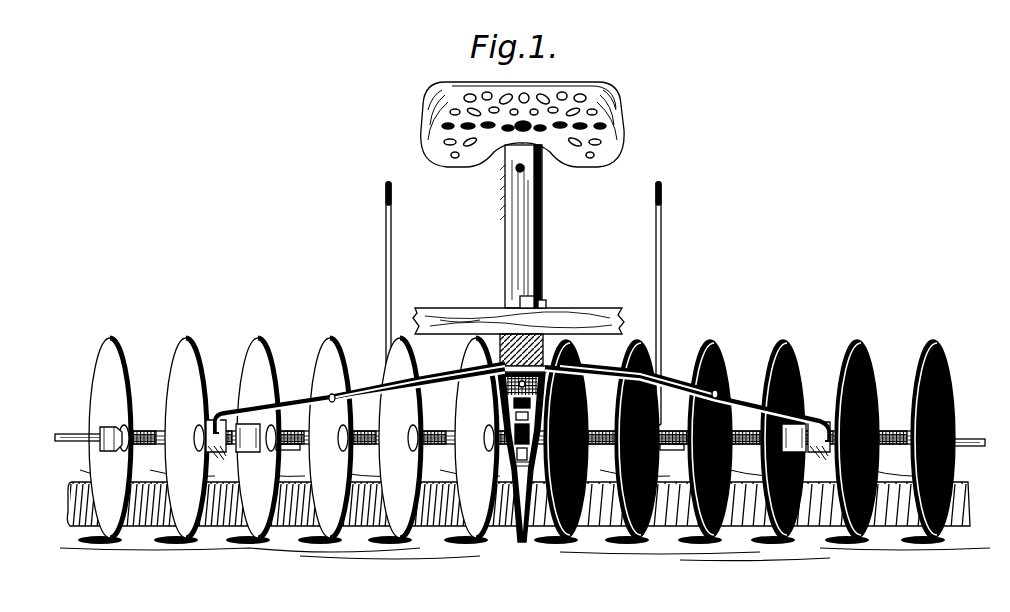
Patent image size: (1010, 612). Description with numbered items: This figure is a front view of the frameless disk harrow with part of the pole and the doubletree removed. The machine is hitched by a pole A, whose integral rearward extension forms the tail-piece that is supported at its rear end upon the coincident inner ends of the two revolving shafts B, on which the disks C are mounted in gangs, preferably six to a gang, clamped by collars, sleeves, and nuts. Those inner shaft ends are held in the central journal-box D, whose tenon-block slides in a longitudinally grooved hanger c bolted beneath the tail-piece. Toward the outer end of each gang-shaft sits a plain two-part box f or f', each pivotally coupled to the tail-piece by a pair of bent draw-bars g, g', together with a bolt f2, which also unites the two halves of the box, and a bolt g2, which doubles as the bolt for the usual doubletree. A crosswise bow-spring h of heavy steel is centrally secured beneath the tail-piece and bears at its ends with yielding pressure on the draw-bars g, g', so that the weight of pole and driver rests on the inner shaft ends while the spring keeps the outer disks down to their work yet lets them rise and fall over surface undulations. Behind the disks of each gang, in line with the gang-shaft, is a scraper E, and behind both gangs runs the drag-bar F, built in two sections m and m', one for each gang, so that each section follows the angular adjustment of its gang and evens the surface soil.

The pole A is at (548, 339).
The revolving shafts B is at (158, 431).
The disks C is at (523, 438).
The journal-box D is at (503, 422).
The scraper E is at (515, 432).
The drag-bar F is at (517, 515).
The hanger c is at (510, 392).
The two-part box f is at (248, 438).
The two-part box f' is at (794, 438).
The bolt f2 is at (517, 450).
The bent draw-bar g is at (360, 402).
The bent draw-bar g' is at (686, 405).
The bolt g2 is at (534, 300).
The bow-spring h is at (376, 389).
The drag-bar section m is at (288, 464).
The drag-bar section m' is at (672, 476).